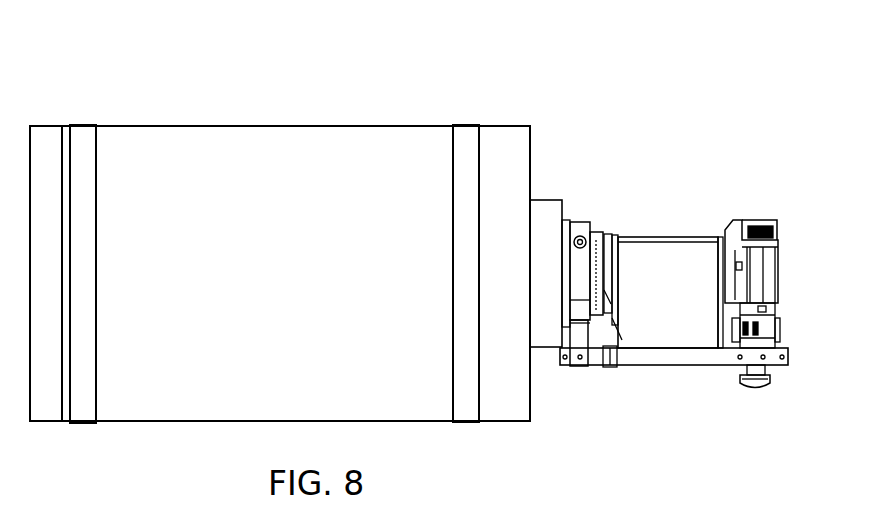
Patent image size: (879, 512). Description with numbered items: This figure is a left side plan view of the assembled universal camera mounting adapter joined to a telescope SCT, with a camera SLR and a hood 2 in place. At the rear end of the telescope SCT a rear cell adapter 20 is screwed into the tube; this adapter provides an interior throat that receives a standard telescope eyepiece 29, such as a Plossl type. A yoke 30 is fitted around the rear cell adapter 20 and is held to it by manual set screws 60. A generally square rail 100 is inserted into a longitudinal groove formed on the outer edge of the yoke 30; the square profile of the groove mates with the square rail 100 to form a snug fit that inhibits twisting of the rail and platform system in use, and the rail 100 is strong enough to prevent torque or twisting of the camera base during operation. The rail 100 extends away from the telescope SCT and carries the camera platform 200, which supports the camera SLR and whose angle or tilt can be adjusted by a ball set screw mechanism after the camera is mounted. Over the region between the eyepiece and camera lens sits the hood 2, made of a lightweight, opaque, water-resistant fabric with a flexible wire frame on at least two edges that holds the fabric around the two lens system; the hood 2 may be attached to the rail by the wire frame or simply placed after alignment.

The telescope SCT is at (412, 153).
The manual set screws 60 is at (581, 236).
The rear cell adapter 20 is at (603, 257).
The telescope eyepiece 29 is at (605, 294).
The hood 2 is at (681, 255).
The camera SLR is at (760, 223).
The rail 100 is at (680, 357).
The yoke 30 is at (577, 342).
The camera platform 200 is at (743, 426).